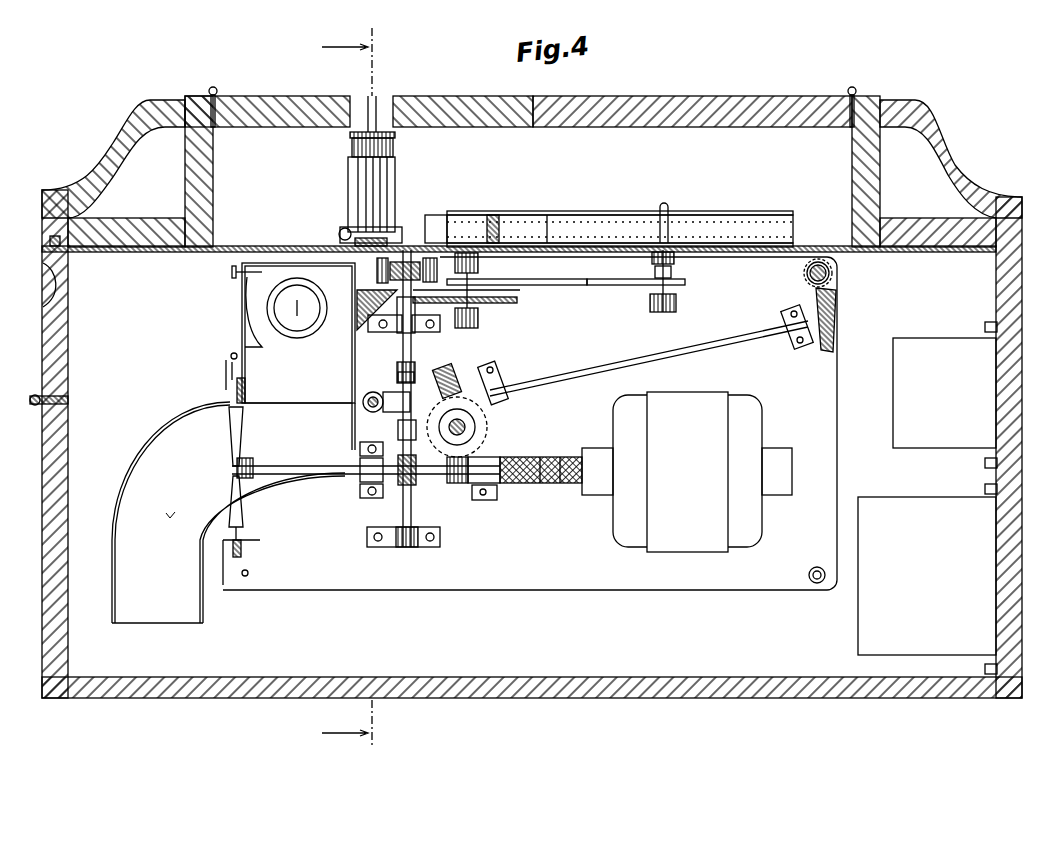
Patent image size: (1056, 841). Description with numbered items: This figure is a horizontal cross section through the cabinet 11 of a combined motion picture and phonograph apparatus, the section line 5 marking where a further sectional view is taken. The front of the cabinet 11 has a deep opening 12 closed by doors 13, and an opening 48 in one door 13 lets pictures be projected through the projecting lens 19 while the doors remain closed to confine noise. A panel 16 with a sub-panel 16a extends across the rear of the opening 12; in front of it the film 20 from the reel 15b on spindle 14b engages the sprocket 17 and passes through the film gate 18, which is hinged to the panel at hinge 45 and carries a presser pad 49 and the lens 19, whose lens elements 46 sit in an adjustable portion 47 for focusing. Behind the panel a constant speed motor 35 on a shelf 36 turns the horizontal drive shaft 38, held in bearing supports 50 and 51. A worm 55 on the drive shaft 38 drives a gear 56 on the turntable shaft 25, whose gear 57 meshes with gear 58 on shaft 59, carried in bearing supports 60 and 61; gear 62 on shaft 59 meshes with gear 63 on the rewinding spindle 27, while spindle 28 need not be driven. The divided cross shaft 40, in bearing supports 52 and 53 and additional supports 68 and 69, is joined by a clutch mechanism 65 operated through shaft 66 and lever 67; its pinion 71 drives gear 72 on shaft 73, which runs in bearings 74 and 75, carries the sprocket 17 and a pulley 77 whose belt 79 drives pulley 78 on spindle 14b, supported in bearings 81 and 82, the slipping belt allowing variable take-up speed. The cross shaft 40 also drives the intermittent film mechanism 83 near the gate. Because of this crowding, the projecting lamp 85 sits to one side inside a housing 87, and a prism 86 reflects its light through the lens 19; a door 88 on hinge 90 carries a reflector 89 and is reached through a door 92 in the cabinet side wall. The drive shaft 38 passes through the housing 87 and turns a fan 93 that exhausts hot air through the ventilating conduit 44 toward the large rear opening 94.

The section line 5 is at (347, 386).
The cabinet 11 is at (1022, 250).
The opening 12 is at (266, 185).
The doors 13 is at (813, 130).
The spindle 14b is at (668, 207).
The film carrying reel 15b is at (790, 215).
The panel 16 is at (282, 246).
The sub-panel 16a is at (322, 246).
The sprocket 17 is at (447, 215).
The film gate 18 is at (395, 220).
The projecting lens 19 is at (348, 185).
The film 20 is at (520, 215).
The shaft 25 is at (470, 420).
The spindle 27 is at (832, 276).
The spindle 28 is at (820, 590).
The motor 35 is at (705, 393).
The shelf 36 is at (533, 582).
The drive shaft 38 is at (320, 467).
The cross shaft 40 is at (402, 515).
The ventilating conduit 44 is at (160, 410).
The hinge 45 is at (340, 233).
The lens elements 46 is at (395, 160).
The adjustable portion 47 is at (349, 140).
The opening 48 is at (356, 106).
The presser pad 49 is at (392, 240).
The bearing support 50 is at (488, 500).
The bearing support 51 is at (345, 490).
The bearing support 52 is at (410, 547).
The bearing support 53 is at (435, 333).
The worm 55 is at (450, 487).
The gear 56 is at (465, 427).
The gear 57 is at (475, 436).
The gear 58 is at (455, 368).
The shaft 59 is at (600, 357).
The bearing support 60 is at (500, 372).
The bearing support 61 is at (788, 325).
The gear 62 is at (836, 348).
The gear 63 is at (803, 273).
The clutch mechanism 65 is at (398, 428).
The shaft 66 is at (368, 394).
The lever 67 is at (395, 375).
The bearing support 68 is at (415, 372).
The bearing support 69 is at (415, 505).
The pinion 71 is at (375, 333).
The gear 72 is at (518, 300).
The shaft 73 is at (480, 290).
The bearing 74 is at (480, 264).
The bearing 75 is at (480, 318).
The pulley 77 is at (480, 282).
The pulley 78 is at (672, 273).
The belt 79 is at (632, 274).
The bearing 81 is at (676, 260).
The bearing 82 is at (677, 303).
The intermittent film mechanism 83 is at (350, 272).
The projecting lamp 85 is at (295, 340).
The prism 86 is at (352, 312).
The housing 87 is at (353, 372).
The door 88 is at (245, 320).
The reflector 89 is at (270, 272).
The hinge 90 is at (230, 358).
The door 92 is at (68, 295).
The fan 93 is at (243, 428).
The opening 94 is at (215, 677).